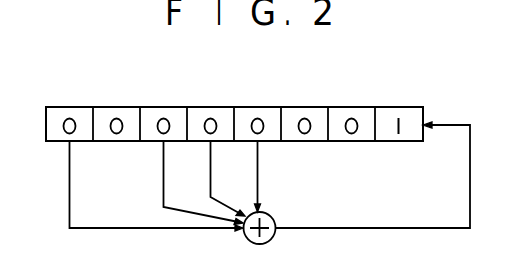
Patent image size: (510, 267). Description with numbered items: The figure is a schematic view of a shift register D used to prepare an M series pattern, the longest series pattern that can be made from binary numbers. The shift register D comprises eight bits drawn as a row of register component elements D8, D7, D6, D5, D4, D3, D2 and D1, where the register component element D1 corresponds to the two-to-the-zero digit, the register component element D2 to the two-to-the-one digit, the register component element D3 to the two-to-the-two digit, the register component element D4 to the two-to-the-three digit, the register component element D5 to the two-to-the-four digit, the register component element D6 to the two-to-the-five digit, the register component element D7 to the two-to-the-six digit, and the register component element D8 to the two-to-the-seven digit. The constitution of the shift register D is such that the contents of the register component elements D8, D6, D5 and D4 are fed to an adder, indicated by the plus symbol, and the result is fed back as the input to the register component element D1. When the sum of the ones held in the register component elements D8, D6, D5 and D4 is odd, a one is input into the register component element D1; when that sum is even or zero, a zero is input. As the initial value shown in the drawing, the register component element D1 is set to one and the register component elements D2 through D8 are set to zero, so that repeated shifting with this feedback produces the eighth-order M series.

The shift register D is at (398, 75).
The register component element D1 is at (396, 106).
The register component element D2 is at (350, 106).
The register component element D3 is at (303, 106).
The register component element D4 is at (256, 145).
The register component element D5 is at (221, 147).
The register component element D6 is at (197, 152).
The register component element D7 is at (115, 106).
The register component element D8 is at (150, 155).